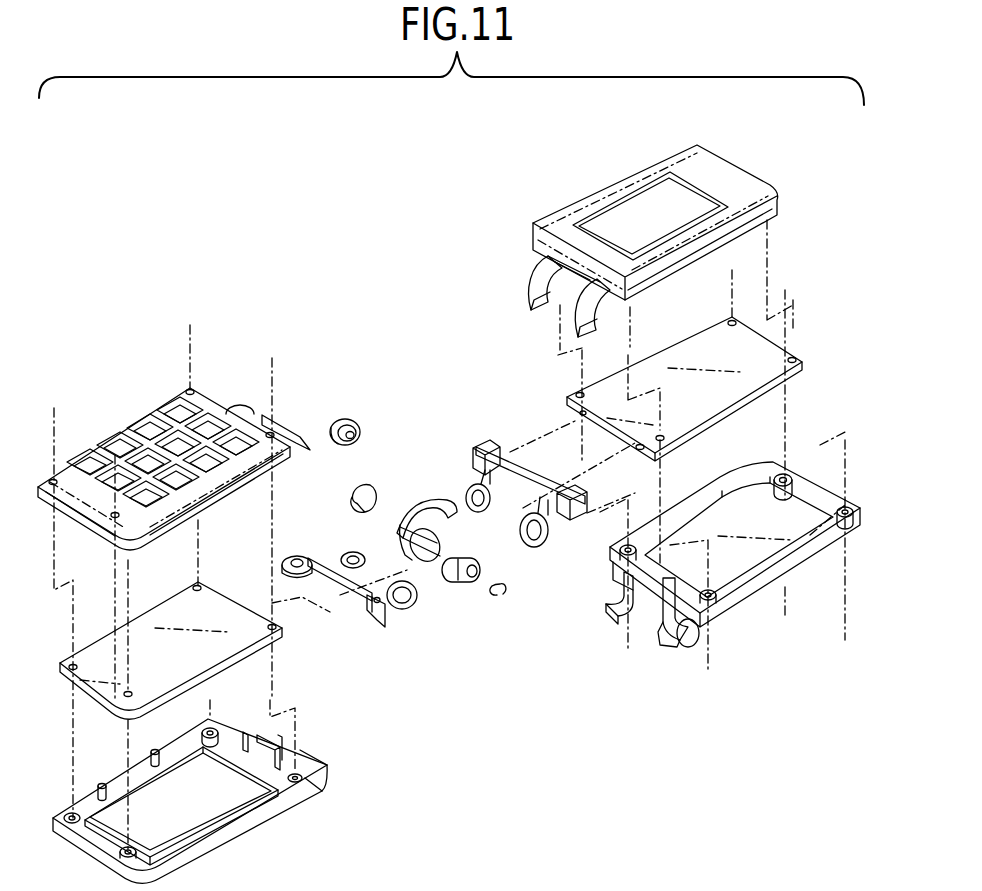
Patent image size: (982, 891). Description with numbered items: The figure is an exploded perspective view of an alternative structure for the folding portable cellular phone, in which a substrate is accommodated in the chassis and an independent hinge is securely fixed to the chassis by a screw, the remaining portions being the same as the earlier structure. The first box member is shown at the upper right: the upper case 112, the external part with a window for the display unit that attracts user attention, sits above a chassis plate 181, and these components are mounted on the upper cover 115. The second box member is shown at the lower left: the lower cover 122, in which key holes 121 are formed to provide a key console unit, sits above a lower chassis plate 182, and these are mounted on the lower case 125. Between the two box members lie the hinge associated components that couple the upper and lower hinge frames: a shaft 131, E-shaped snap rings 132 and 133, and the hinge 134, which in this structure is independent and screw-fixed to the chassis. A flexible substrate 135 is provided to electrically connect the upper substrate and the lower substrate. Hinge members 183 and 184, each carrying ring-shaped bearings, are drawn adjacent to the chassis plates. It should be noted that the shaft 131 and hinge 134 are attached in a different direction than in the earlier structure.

The upper case 112 is at (615, 198).
The upper cover 115 is at (725, 603).
The key holes 121 is at (217, 427).
The lower cover 122 is at (157, 415).
The lower case 125 is at (220, 833).
The shaft 131 is at (335, 418).
The E-shaped snap ring 132 is at (358, 490).
The E-shaped snap ring 133 is at (503, 597).
The hinge 134 is at (458, 583).
The flexible substrate 135 is at (420, 500).
The upper plate 181 is at (781, 365).
The lower plate 182 is at (97, 650).
The hinge bar 183 is at (483, 447).
The lever 184 is at (380, 617).